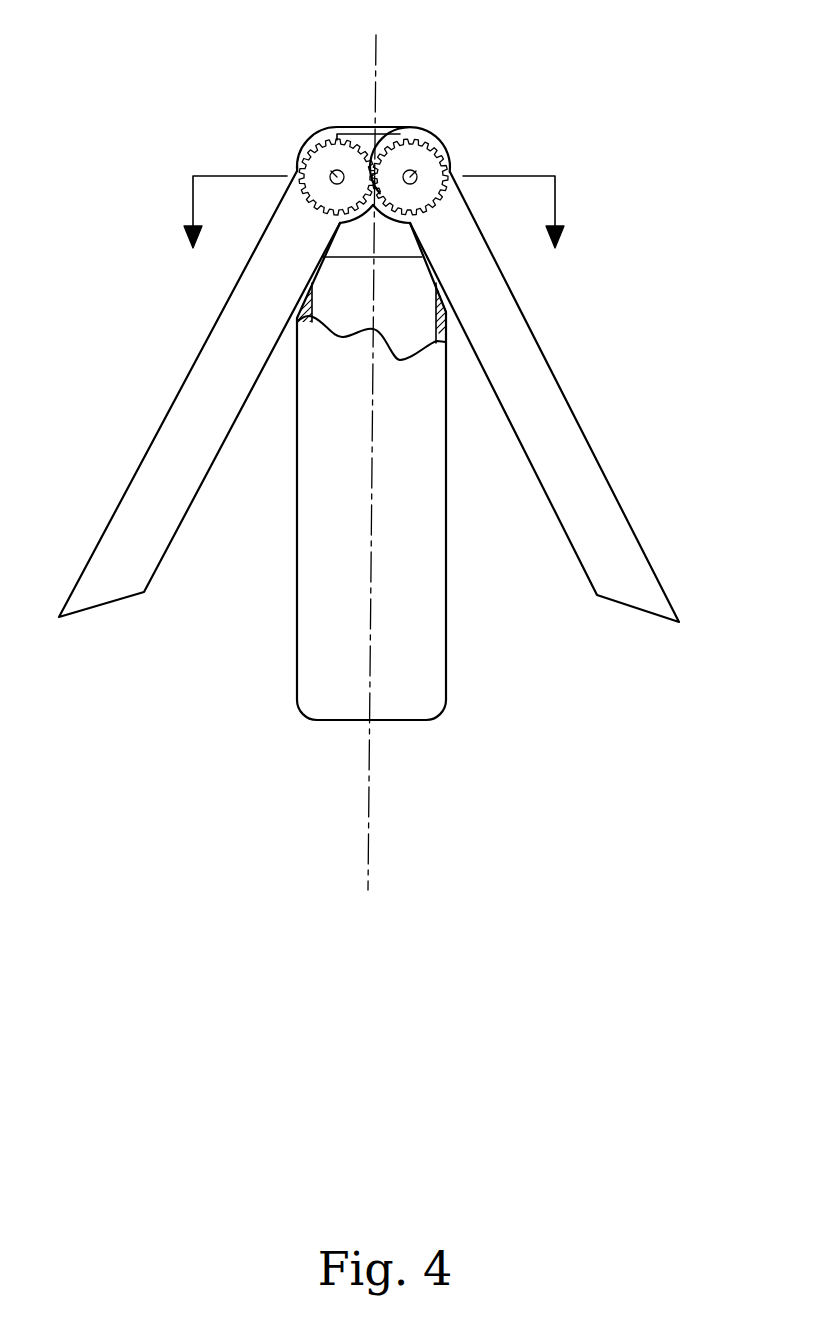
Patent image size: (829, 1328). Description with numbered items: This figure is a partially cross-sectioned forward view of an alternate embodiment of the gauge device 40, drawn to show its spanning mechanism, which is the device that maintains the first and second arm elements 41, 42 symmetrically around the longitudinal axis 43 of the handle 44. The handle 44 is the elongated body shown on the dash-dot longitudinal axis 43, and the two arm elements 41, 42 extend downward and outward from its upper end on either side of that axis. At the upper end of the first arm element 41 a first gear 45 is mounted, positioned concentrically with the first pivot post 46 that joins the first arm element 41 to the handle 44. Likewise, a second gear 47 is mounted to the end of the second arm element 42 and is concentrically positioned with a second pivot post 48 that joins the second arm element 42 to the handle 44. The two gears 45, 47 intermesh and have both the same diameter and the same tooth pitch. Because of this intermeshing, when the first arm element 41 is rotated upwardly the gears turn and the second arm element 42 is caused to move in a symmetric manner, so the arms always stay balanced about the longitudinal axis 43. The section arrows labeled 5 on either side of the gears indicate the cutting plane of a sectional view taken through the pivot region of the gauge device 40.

The gauge device 40 is at (618, 88).
The first arm element 41 is at (173, 508).
The second arm element 42 is at (568, 513).
The longitudinal axis 43 is at (368, 825).
The handle 44 is at (432, 665).
The first gear 45 is at (298, 170).
The first pivot post 46 is at (334, 172).
The second gear 47 is at (452, 172).
The second pivot post 48 is at (414, 172).
The section line 5- 5 is at (374, 230).